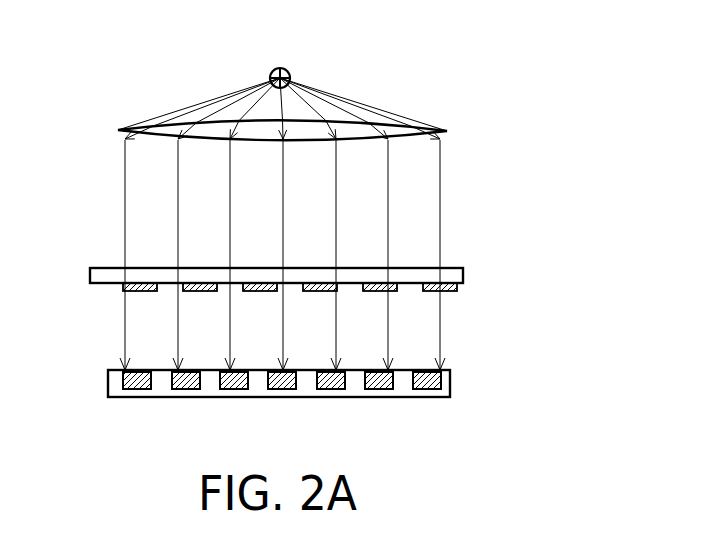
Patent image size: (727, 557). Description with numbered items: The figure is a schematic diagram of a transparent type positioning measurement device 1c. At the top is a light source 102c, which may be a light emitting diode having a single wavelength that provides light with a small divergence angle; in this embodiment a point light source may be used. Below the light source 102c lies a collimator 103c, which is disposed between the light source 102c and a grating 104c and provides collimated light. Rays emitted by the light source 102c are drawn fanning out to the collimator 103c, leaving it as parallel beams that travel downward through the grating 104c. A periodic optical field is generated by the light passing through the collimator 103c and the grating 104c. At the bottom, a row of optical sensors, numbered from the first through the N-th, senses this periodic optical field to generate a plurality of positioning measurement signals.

The transparent type positioning measurement device 1c is at (568, 32).
The light source 102c is at (288, 70).
The collimator 103c is at (447, 131).
The grating 104c is at (463, 275).